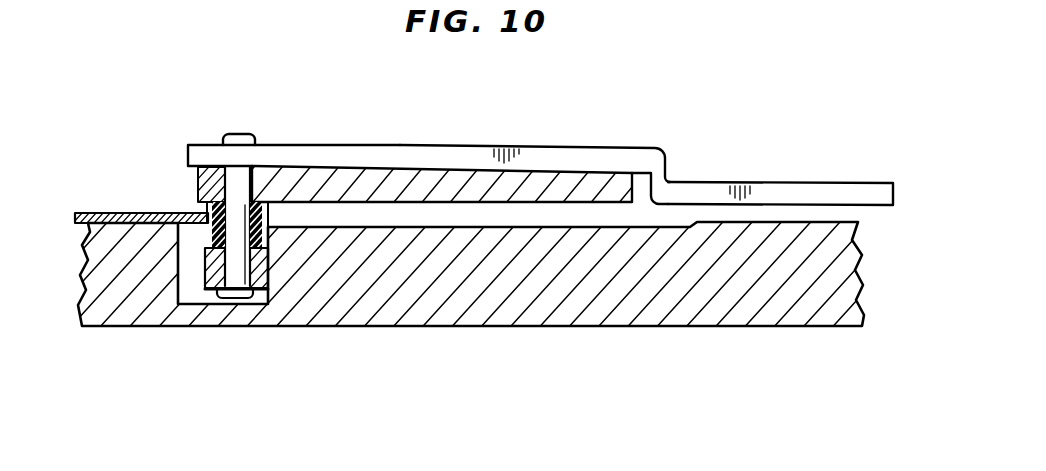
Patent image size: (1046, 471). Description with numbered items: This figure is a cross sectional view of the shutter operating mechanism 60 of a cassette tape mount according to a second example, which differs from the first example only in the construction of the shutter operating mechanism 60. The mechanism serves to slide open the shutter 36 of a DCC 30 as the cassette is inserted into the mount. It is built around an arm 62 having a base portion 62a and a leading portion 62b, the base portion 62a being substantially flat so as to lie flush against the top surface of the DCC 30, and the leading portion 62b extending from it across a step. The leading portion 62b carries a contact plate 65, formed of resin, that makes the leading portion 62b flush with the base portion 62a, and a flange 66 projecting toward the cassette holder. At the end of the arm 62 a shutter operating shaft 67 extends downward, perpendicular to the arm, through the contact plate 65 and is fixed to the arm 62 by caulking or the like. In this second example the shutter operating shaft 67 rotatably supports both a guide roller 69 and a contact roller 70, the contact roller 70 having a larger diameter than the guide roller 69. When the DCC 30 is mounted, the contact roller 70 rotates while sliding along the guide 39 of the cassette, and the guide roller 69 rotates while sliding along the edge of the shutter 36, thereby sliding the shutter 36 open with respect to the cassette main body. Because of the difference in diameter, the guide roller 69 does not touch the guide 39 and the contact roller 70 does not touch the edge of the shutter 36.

The DCC 30 is at (582, 298).
The shutter 36 is at (103, 211).
The guide 39 is at (206, 297).
The shutter operating mechanism 60 is at (420, 127).
The arm 62 is at (344, 160).
The base portion 62a is at (792, 195).
The leading portion 62b is at (568, 162).
The contact plate 65 is at (198, 180).
The flange 66 is at (207, 152).
The shutter operating shaft 67 is at (245, 172).
The guide roller 69 is at (210, 204).
The contact roller 70 is at (208, 276).